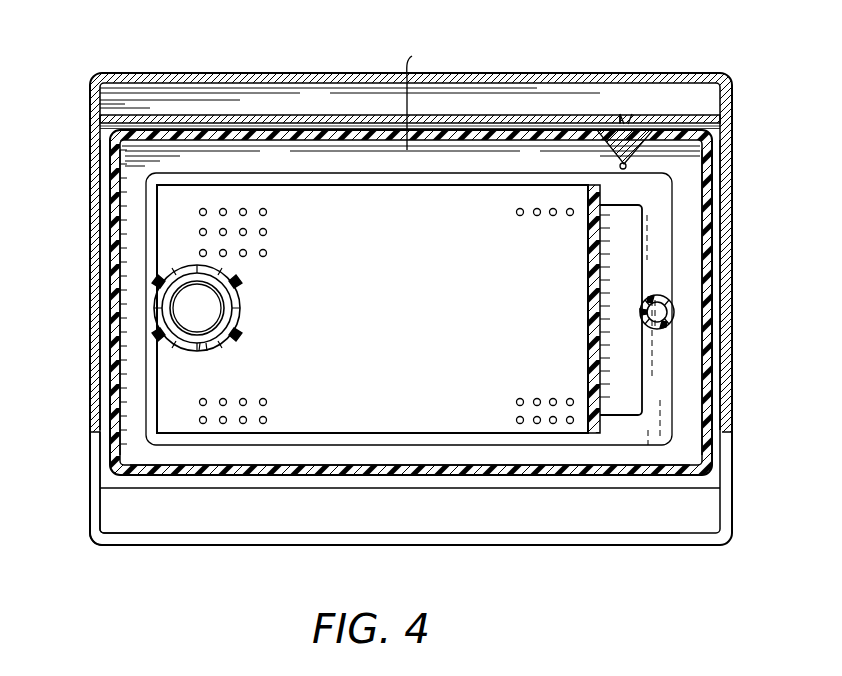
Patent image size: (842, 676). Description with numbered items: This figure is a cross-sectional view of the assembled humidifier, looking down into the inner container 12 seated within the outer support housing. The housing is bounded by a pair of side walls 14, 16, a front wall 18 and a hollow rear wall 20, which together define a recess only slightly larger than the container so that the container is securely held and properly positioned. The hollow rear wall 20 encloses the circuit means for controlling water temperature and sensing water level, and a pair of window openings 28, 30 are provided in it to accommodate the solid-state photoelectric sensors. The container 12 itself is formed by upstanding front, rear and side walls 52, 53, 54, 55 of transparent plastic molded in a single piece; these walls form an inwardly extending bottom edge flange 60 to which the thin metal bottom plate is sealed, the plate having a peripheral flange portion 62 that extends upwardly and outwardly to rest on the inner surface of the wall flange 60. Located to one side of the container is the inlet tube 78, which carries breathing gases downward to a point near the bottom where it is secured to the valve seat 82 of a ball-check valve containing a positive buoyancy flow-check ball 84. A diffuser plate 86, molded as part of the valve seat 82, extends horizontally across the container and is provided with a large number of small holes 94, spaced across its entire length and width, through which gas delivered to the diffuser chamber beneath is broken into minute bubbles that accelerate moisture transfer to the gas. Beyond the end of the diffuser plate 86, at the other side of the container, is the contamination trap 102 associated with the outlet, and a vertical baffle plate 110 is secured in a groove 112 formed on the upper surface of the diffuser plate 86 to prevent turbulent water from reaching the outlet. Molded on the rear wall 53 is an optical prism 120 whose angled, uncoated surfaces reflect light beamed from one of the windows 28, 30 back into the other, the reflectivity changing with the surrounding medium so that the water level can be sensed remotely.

The inner container 12 is at (107, 476).
The side wall 14 is at (96, 326).
The side wall 16 is at (731, 308).
The front wall 18 is at (277, 540).
The hollow rear wall 20 is at (614, 101).
The window opening 28 is at (612, 120).
The window opening 30 is at (645, 118).
The front wall 52 is at (497, 466).
The rear wall 53 is at (424, 91).
The side wall 54 is at (113, 283).
The side wall 55 is at (708, 400).
The bottom edge flange 60 is at (688, 246).
The peripheral flange portion 62 is at (660, 237).
The inlet tube 78 is at (216, 315).
The valve seat 82 is at (207, 338).
The flow-check ball 84 is at (210, 300).
The diffuser plate 86 is at (416, 364).
The small holes 94 is at (268, 232).
The contamination trap 102 is at (662, 330).
The vertical baffle plate 110 is at (594, 298).
The groove 112 is at (590, 270).
The optical prism 120 is at (612, 155).